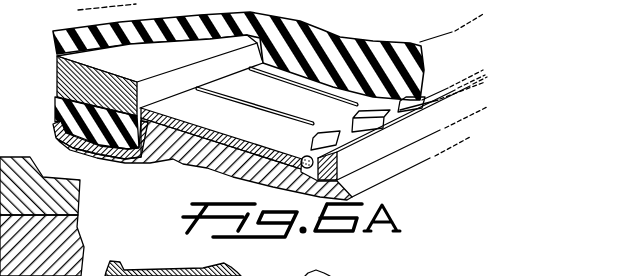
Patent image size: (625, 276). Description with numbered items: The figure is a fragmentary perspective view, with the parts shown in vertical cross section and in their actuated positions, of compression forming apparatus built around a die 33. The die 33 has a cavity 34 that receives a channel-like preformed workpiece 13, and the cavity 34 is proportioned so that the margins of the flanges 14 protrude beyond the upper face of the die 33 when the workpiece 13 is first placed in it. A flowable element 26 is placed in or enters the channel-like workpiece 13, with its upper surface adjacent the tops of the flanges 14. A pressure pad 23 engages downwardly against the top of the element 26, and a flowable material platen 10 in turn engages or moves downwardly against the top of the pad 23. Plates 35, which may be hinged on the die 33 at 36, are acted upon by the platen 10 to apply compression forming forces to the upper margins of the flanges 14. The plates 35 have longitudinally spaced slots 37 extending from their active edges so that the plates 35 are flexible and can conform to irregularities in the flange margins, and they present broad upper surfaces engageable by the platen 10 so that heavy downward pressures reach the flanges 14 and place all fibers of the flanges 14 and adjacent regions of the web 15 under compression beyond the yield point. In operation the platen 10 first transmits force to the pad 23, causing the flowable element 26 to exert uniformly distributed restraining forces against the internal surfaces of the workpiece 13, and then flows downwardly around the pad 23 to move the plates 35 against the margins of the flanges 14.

The flowable material platen 10 is at (374, 54).
The preformed workpiece 13 is at (55, 0).
The flanges 14 is at (4, 14).
The web 15 is at (138, 3).
The pressure pad 23 is at (67, 82).
The flowable element 26 is at (56, 115).
The die 33 is at (227, 170).
The cavity 34 is at (62, 142).
The plates 35 is at (146, 157).
The hinge 36 is at (301, 153).
The slots 37 is at (252, 104).